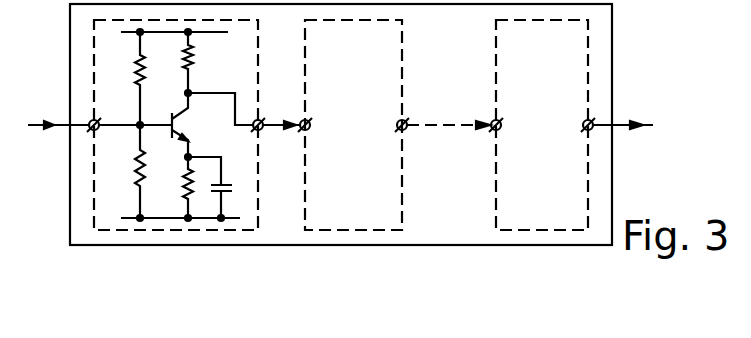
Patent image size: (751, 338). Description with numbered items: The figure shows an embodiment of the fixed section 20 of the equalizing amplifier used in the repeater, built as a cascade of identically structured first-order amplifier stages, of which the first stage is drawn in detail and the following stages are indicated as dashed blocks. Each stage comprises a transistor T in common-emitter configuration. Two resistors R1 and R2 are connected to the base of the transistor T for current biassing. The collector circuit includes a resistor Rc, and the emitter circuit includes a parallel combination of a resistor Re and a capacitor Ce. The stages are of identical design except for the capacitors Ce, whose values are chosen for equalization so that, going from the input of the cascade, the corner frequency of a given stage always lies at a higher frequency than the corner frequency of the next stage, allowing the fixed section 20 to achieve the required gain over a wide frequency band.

The fixed section 20 is at (68, 63).
The resistor R1 is at (134, 81).
The resistor R2 is at (132, 179).
The collector resistor Rc is at (189, 50).
The emitter resistor Re is at (183, 182).
The transistor T is at (170, 111).
The emitter capacitor Ce is at (222, 186).